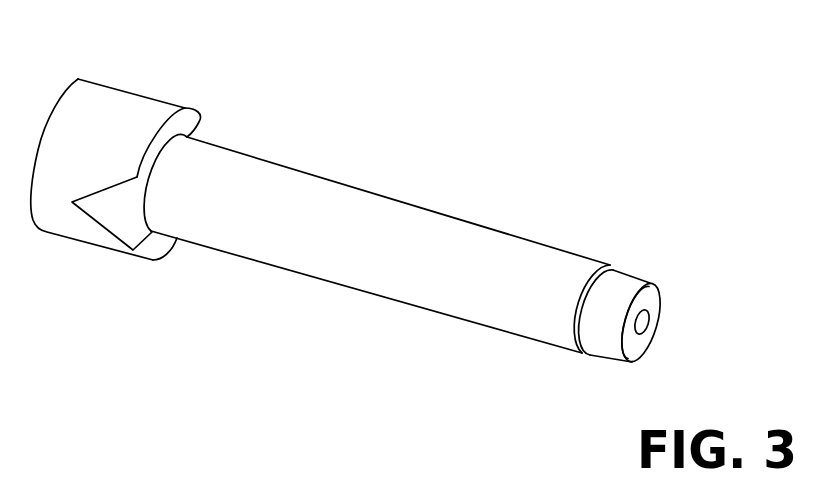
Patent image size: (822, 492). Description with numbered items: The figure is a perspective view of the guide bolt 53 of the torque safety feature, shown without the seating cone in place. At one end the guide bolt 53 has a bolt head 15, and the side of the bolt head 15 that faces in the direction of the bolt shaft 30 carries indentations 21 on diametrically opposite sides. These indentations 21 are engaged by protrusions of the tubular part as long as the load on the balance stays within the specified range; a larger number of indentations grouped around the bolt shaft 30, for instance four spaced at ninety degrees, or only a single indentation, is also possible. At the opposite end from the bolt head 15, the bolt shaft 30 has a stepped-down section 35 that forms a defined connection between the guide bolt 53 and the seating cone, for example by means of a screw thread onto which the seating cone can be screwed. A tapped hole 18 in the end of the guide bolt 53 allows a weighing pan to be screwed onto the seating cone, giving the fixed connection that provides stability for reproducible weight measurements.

The bolt head 15 is at (120, 123).
The indentations 21 is at (211, 123).
The bolt shaft 30 is at (375, 227).
The stepped-down section 35 is at (614, 300).
The tapped hole 18 is at (647, 319).
The guide bolt 53 is at (284, 322).